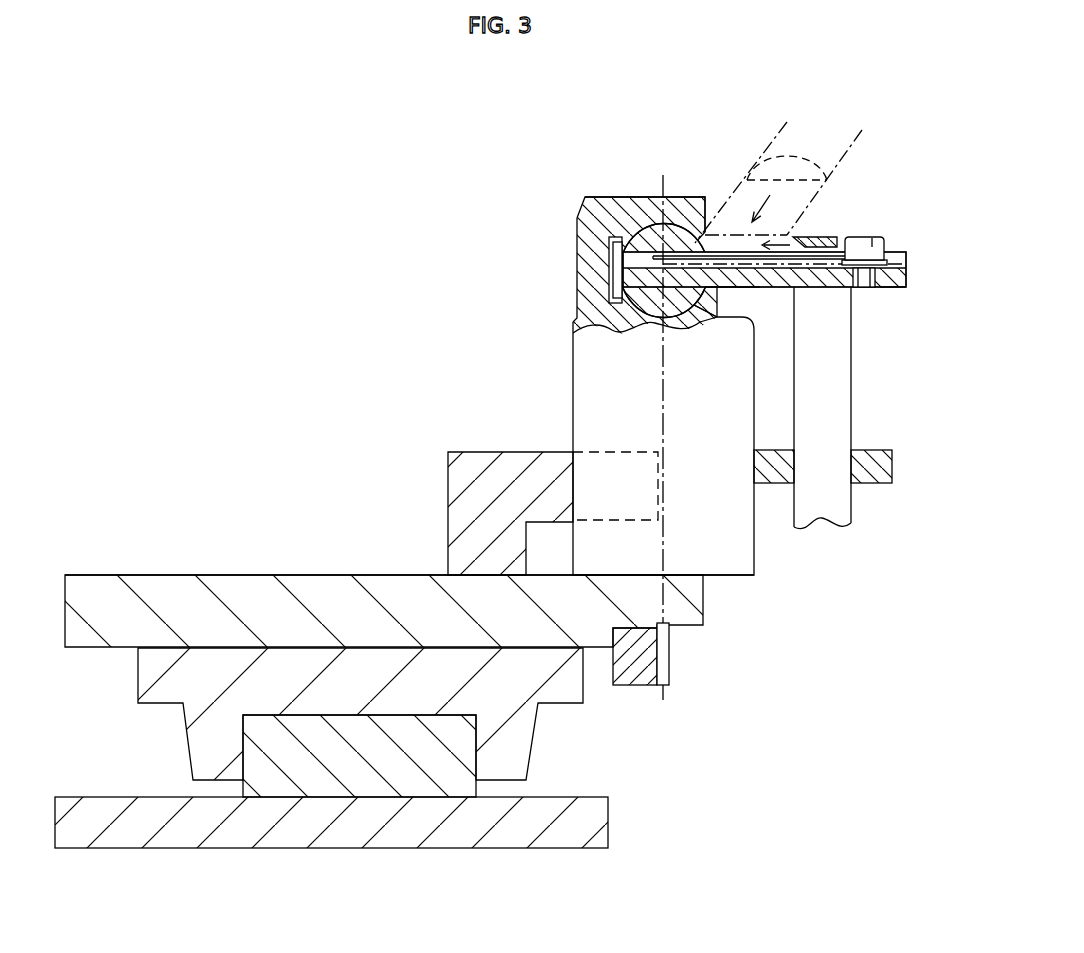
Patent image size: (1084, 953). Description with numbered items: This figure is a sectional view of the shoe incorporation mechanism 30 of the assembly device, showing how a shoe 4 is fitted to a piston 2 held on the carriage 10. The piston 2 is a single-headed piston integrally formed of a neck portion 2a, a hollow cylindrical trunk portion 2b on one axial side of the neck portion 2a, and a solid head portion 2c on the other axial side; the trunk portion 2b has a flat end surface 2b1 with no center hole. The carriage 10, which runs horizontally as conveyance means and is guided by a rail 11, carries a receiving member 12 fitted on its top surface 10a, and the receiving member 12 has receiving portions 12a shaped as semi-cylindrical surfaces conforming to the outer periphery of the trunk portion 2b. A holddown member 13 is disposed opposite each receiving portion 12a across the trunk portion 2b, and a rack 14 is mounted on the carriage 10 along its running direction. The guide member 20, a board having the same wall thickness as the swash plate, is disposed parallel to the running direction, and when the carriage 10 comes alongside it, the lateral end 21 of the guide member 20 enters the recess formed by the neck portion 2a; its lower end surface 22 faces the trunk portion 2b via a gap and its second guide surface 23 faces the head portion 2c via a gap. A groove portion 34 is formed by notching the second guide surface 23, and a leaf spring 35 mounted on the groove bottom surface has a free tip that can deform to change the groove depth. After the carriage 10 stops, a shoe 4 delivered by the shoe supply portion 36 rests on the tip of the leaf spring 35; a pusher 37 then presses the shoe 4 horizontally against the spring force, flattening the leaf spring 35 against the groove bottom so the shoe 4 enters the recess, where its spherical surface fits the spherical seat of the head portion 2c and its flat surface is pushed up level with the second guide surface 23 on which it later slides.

The piston 2 is at (621, 382).
The neck portion 2a is at (577, 273).
The trunk portion 2b is at (633, 471).
The flat end surface 2b1 is at (731, 576).
The head portion 2c is at (620, 197).
The shoe 4 is at (612, 228).
The carriage 10 is at (384, 639).
The top surface 10a is at (347, 571).
The rail 11 is at (373, 790).
The receiving member 12 is at (455, 485).
The receiving portion 12a is at (576, 465).
The holddown member 13 is at (787, 485).
The rack 14 is at (639, 688).
The guide member 20 is at (892, 291).
The lateral end 21 is at (612, 260).
The lower end surface 22 is at (722, 302).
The second guide surface 23 is at (905, 252).
The shoe incorporation mechanism 30 is at (732, 253).
The groove portion 34 is at (636, 262).
The leaf spring 35 is at (722, 288).
The shoe supply portion 36 is at (735, 183).
The pusher 37 is at (812, 237).